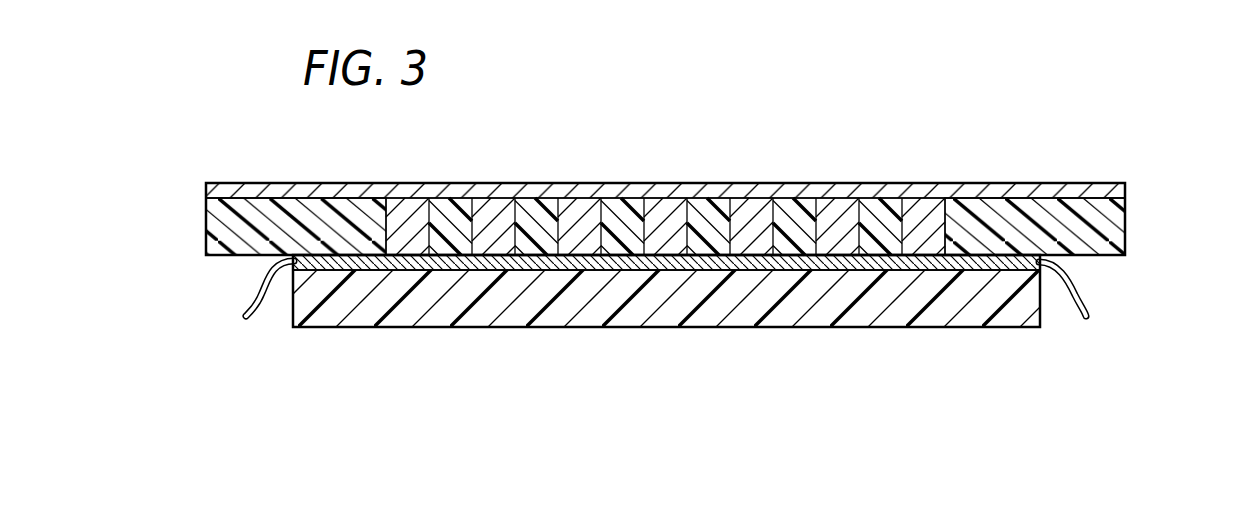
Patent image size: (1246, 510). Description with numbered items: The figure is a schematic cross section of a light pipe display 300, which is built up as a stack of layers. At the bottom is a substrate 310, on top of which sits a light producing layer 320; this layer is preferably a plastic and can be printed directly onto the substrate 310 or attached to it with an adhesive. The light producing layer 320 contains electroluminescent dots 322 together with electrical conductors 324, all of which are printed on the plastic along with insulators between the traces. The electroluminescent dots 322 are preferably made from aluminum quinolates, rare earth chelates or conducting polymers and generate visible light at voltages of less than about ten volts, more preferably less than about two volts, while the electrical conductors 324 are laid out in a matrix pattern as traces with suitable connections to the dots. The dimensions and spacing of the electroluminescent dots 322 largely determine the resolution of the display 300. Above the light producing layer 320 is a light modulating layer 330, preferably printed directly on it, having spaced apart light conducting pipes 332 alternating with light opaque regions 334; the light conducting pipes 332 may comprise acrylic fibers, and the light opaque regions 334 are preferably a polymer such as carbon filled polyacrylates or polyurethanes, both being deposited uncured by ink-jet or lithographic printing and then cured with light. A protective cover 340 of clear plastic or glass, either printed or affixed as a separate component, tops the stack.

The display 300 is at (1079, 133).
The substrate 310 is at (403, 329).
The light producing layer 320 is at (1068, 268).
The electroluminescent dots 322 is at (627, 265).
The electrical conductors 324 is at (256, 293).
The light modulating layer 330 is at (206, 222).
The light conducting pipes 332 is at (545, 207).
The light opaque regions 334 is at (580, 207).
The protective cover 340 is at (343, 182).